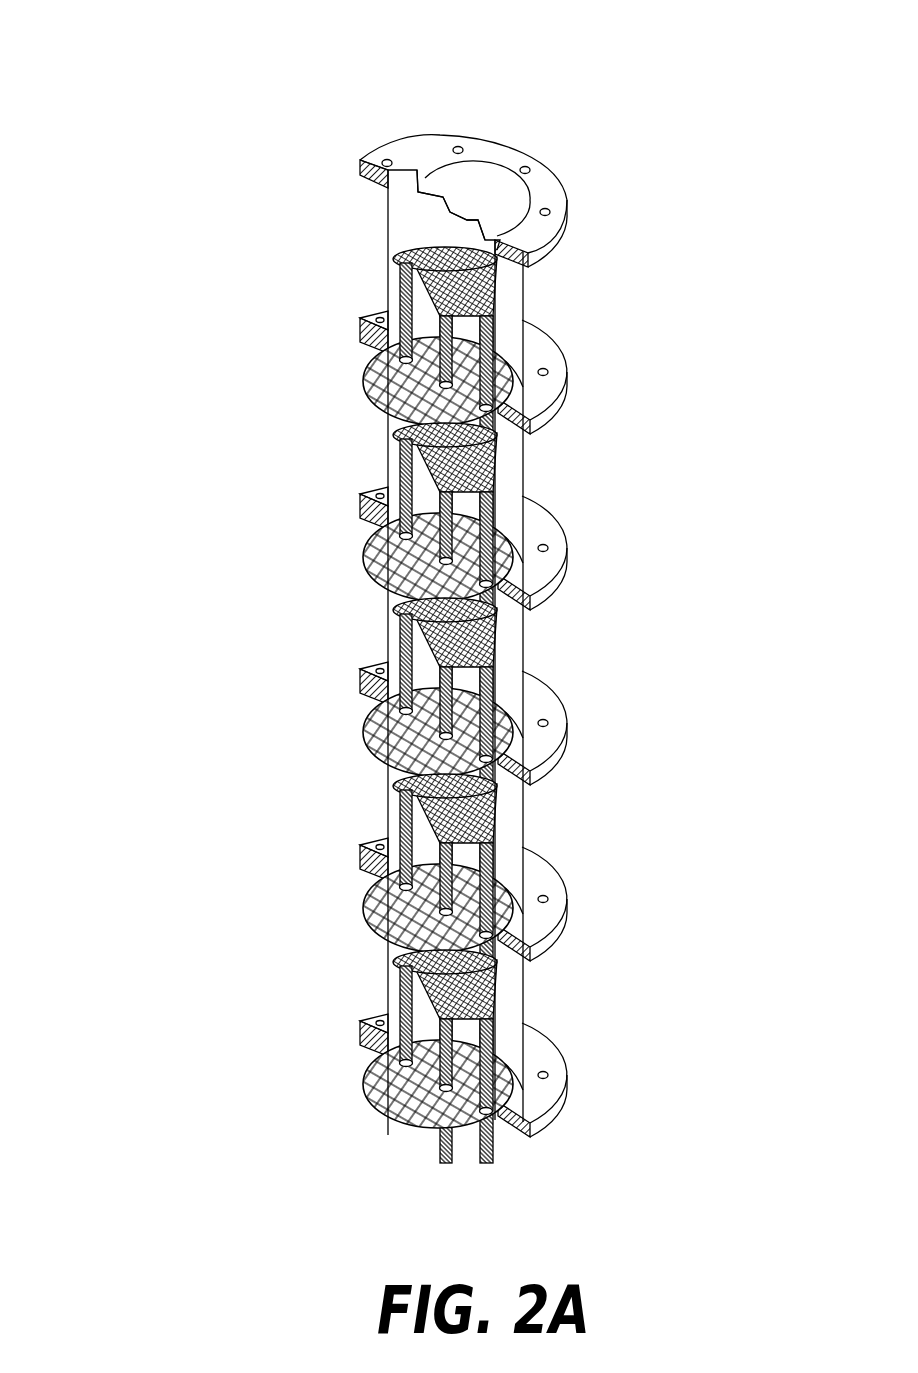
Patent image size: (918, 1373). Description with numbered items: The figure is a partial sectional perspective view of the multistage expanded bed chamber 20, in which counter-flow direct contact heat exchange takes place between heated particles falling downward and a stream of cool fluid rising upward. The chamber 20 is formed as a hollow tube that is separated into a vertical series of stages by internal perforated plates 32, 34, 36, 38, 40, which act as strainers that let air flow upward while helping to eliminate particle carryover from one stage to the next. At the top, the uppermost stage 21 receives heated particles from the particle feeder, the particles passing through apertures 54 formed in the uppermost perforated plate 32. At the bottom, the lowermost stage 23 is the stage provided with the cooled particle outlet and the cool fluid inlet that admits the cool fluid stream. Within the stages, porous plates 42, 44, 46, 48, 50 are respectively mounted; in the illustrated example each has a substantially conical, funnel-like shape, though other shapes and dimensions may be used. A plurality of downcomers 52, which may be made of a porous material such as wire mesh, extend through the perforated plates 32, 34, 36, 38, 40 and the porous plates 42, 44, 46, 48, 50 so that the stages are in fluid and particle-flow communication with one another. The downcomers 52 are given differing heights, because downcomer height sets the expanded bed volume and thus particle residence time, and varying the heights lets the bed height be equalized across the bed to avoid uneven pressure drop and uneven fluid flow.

The multistage expanded bed chamber 20 is at (137, 83).
The uppermost one of the vertically-arrayed stages 21 is at (378, 252).
The lowermost one of the vertically-arrayed stages 23 is at (367, 1083).
The uppermost perforated plate 32 is at (417, 190).
The internal perforated plate 34 is at (365, 390).
The internal perforated plate 36 is at (365, 566).
The internal perforated plate 38 is at (365, 741).
The internal perforated plate 40 is at (365, 914).
The porous plate 42 is at (493, 300).
The porous plate 44 is at (493, 476).
The porous plate 46 is at (493, 651).
The porous plate 48 is at (493, 827).
The porous plate 50 is at (493, 1003).
The downcomers 52 is at (520, 366).
The apertures 54 is at (479, 209).